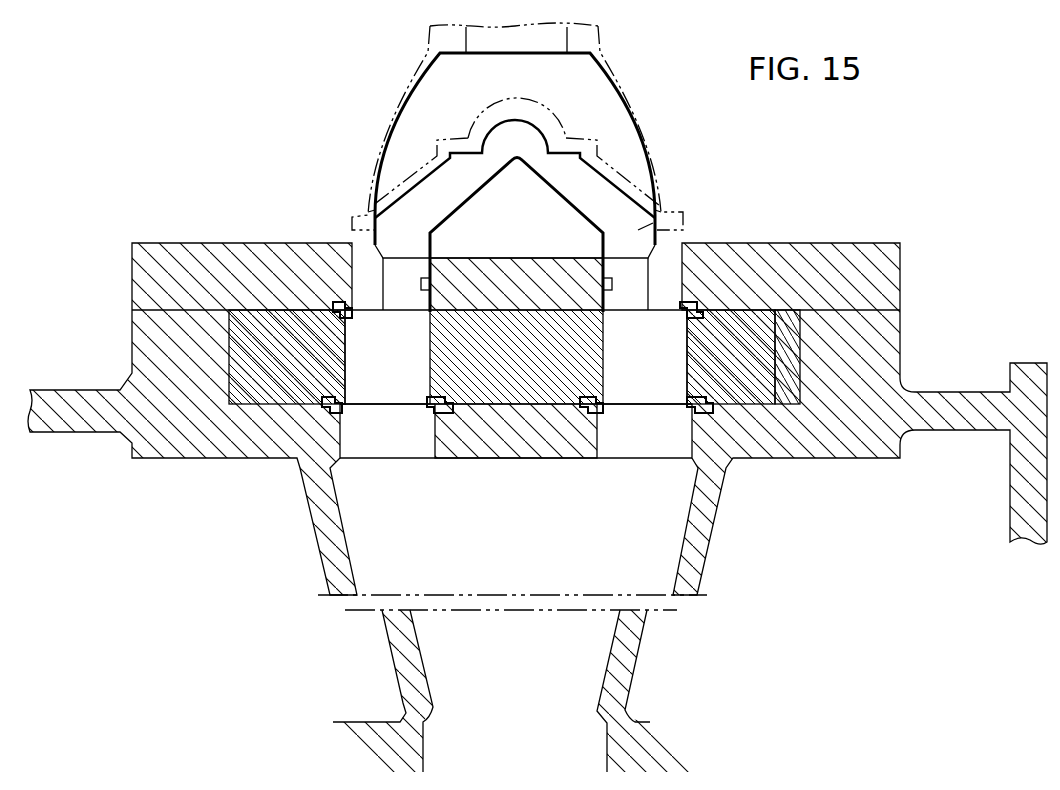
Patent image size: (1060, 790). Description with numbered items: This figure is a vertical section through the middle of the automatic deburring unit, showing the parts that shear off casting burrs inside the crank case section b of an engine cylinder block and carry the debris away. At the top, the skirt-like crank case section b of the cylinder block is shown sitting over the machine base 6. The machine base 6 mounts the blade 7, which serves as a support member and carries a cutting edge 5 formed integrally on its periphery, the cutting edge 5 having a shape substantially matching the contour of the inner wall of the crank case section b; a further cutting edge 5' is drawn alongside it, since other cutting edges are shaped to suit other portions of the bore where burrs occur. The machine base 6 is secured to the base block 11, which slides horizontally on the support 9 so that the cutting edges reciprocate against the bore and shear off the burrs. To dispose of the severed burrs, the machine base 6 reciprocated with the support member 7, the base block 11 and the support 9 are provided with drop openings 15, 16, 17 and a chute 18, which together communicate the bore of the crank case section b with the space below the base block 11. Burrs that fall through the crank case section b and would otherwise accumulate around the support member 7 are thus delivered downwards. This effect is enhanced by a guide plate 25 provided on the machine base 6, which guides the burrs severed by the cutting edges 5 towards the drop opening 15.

The crank case section b is at (628, 92).
The cutting edge 5 is at (532, 142).
The bead ring flange 5' is at (529, 193).
The blade 7 is at (632, 165).
The guide plate 25 is at (468, 197).
The machine base 6 is at (600, 303).
The drop opening 15 is at (401, 296).
The base block 11 is at (600, 346).
The drop opening 16 is at (516, 449).
The drop opening 17 is at (412, 447).
The support 9 is at (568, 442).
The chute 18 is at (513, 580).